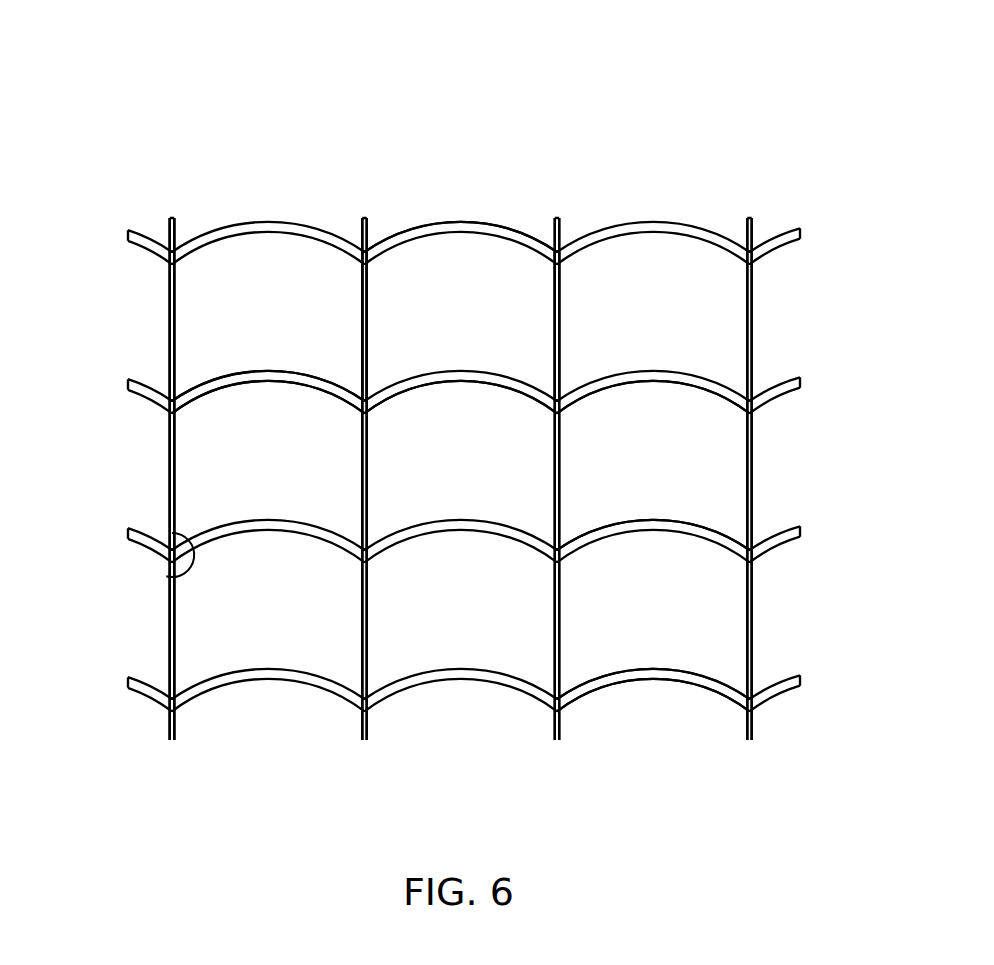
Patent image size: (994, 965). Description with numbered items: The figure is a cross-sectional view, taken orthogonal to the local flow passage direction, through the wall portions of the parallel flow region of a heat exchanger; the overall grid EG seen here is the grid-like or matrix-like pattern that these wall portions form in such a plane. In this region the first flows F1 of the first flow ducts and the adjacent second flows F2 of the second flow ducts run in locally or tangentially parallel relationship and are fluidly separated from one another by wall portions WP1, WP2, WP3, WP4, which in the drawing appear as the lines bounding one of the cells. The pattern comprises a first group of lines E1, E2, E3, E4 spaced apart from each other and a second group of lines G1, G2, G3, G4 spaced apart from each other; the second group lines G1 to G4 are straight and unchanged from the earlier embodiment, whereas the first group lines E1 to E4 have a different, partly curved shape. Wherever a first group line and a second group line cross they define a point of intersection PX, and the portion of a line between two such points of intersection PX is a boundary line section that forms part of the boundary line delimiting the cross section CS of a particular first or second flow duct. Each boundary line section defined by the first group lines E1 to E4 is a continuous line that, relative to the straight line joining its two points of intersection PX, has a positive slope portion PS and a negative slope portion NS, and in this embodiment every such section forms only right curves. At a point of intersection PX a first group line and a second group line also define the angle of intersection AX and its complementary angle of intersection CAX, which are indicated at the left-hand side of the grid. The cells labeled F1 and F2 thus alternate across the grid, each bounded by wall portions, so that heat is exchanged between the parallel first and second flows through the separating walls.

The electrode grid EG is at (140, 52).
The points of intersection PX is at (183, 235).
The first group line E1 is at (703, 220).
The first group line E2 is at (703, 370).
The first group line E3 is at (700, 520).
The first group line E4 is at (700, 670).
The second group line G1 is at (166, 307).
The second group line G2 is at (358, 477).
The second group line G3 is at (553, 632).
The second group line G4 is at (745, 678).
The wall portion WP1 is at (482, 222).
The wall portion WP2 is at (370, 298).
The wall portion WP3 is at (515, 376).
The wall portion WP4 is at (566, 305).
The cross section of a flow duct CS is at (712, 460).
The positive slope portion PS is at (205, 382).
The negative slope portion NS is at (298, 385).
The angle of intersection AX is at (170, 525).
The complementary angle of intersection CAX is at (182, 572).
The first flow F1 is at (282, 324).
The second flow F2 is at (478, 324).